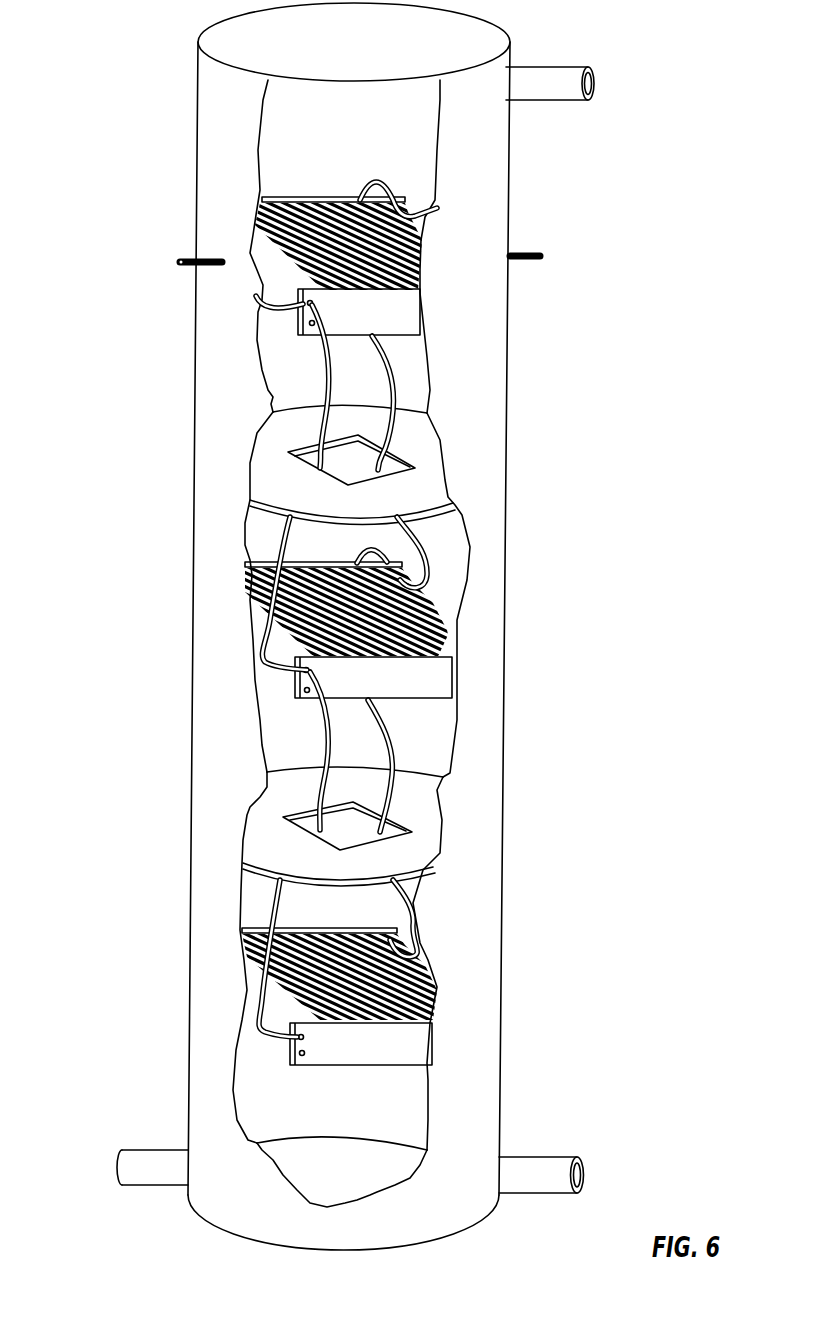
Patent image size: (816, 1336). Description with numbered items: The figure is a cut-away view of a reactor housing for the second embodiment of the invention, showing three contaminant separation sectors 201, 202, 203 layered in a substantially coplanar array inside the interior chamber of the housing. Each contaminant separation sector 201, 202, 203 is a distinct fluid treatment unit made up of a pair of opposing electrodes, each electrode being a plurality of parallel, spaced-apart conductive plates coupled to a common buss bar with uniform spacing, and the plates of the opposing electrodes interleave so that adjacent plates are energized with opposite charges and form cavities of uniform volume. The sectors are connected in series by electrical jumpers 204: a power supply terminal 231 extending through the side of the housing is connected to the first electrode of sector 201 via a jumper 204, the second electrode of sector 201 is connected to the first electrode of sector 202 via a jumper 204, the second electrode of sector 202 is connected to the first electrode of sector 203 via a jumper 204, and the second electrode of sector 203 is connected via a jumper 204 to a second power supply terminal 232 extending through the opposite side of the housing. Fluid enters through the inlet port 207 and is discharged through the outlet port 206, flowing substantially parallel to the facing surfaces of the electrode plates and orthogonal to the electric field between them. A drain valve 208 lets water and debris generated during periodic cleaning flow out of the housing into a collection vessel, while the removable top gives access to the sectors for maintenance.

The contaminant separation sector 201 is at (258, 185).
The contaminant separation sector 202 is at (250, 553).
The contaminant separation sector 203 is at (237, 905).
The electrical jumper 204 is at (352, 612).
The outlet port 206 is at (584, 59).
The inlet port 207 is at (575, 1154).
The drain valve 208 is at (121, 1150).
The power supply terminal 231 is at (159, 242).
The power supply terminal 232 is at (562, 238).